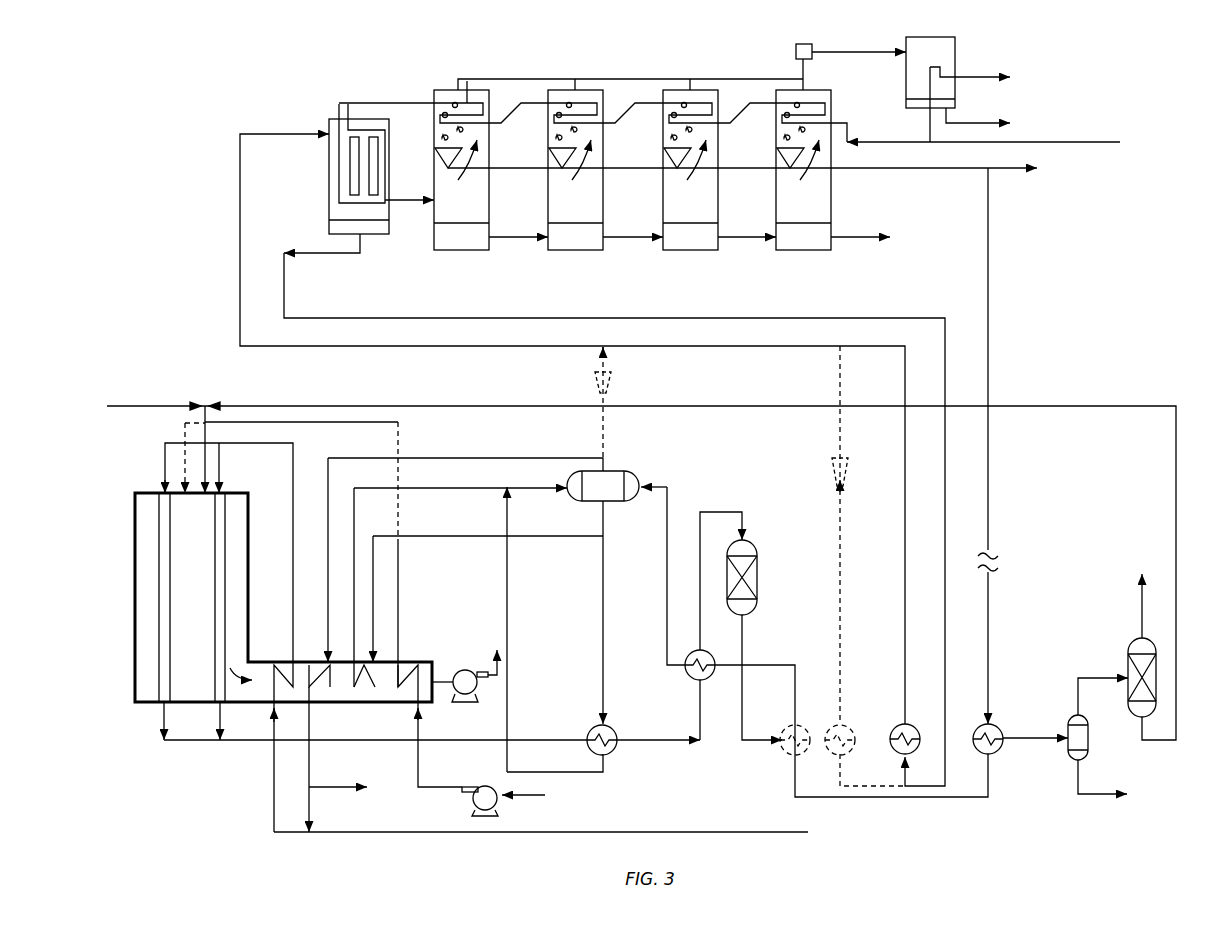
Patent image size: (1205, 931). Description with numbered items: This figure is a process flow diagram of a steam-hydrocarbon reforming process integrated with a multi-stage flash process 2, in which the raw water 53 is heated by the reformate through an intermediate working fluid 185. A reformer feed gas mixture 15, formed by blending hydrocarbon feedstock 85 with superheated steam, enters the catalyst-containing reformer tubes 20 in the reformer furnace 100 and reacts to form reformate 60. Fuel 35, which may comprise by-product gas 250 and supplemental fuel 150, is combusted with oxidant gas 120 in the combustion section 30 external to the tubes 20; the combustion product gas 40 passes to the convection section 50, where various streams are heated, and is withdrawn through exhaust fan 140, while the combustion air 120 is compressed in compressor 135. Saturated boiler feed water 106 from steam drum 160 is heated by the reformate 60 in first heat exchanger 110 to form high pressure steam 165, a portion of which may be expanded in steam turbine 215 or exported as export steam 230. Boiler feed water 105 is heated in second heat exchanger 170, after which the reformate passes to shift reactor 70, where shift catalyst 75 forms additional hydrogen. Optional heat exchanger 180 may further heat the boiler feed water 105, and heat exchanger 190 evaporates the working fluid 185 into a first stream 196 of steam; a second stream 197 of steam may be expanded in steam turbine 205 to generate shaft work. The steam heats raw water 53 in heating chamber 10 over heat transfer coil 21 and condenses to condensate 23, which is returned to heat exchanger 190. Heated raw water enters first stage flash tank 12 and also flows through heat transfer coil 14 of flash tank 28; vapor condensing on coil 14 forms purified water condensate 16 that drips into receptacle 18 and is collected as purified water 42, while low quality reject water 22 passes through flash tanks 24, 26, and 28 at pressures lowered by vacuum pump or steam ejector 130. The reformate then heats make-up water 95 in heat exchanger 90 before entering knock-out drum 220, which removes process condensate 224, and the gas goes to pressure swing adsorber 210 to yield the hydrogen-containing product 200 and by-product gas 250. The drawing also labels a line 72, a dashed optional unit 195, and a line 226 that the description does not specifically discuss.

The multi-stage flash process 2 is at (230, 112).
The heating chamber 10 is at (336, 112).
The first stage flash tank 12 is at (440, 88).
The heat transfer coil 14 is at (467, 81).
The reformer feed gas mixture 15 is at (266, 440).
The purified water condensate 16 is at (445, 113).
The receptacle 18 is at (453, 158).
The catalyst-containing reformer tubes 20 is at (159, 594).
The heat transfer coil 21 is at (362, 203).
The low quality reject water 22 is at (434, 238).
The condensate 23 is at (326, 256).
The flash tank 24 is at (603, 196).
The flash tank 26 is at (718, 196).
The flash tank 28 is at (835, 196).
The combustion section 30 is at (185, 626).
The fuel 35 is at (208, 456).
The combustion product gas 40 is at (228, 696).
The purified water 42 is at (930, 170).
The convection section 50 is at (340, 690).
The raw water 53 is at (1080, 144).
The reformate 60 is at (440, 740).
The shift reactor 70 is at (754, 548).
The heating steam line 72 is at (545, 429).
The shift catalyst 75 is at (757, 586).
The hydrocarbon feedstock 85 is at (700, 832).
The heat exchanger 90 is at (976, 728).
The make-up water 95 is at (990, 644).
The reformer furnace 100 is at (135, 536).
The boiler feed water 105 is at (667, 590).
The saturated boiler feed water 106 is at (603, 524).
The first heat exchanger 110 is at (590, 728).
The oxidant gas 120 is at (398, 604).
The vacuum pump or steam ejector 130 is at (812, 46).
The compressor 135 is at (470, 804).
The exhaust fan 140 is at (462, 670).
The supplemental fuel 150 is at (140, 408).
The steam drum 160 is at (640, 474).
The high pressure steam 165 is at (462, 458).
The second heat exchanger 170 is at (690, 680).
The optional heat exchanger 180 is at (786, 728).
The working fluid 185 is at (948, 536).
The heat exchanger 190 is at (896, 728).
The optional heat exchanger 195 is at (826, 728).
The first stream of steam 196 is at (898, 546).
The second stream of steam 197 is at (842, 612).
The hydrogen-containing product 200 is at (1136, 624).
The steam turbine 205 is at (832, 474).
The pressure swing adsorber 210 is at (1124, 668).
The steam turbine 215 is at (594, 386).
The knock-out drum 220 is at (1088, 745).
The process condensate 224 is at (1106, 796).
The gas line to absorber 226 is at (1078, 692).
The export steam 230 is at (348, 788).
The by-product gas 250 is at (1172, 532).